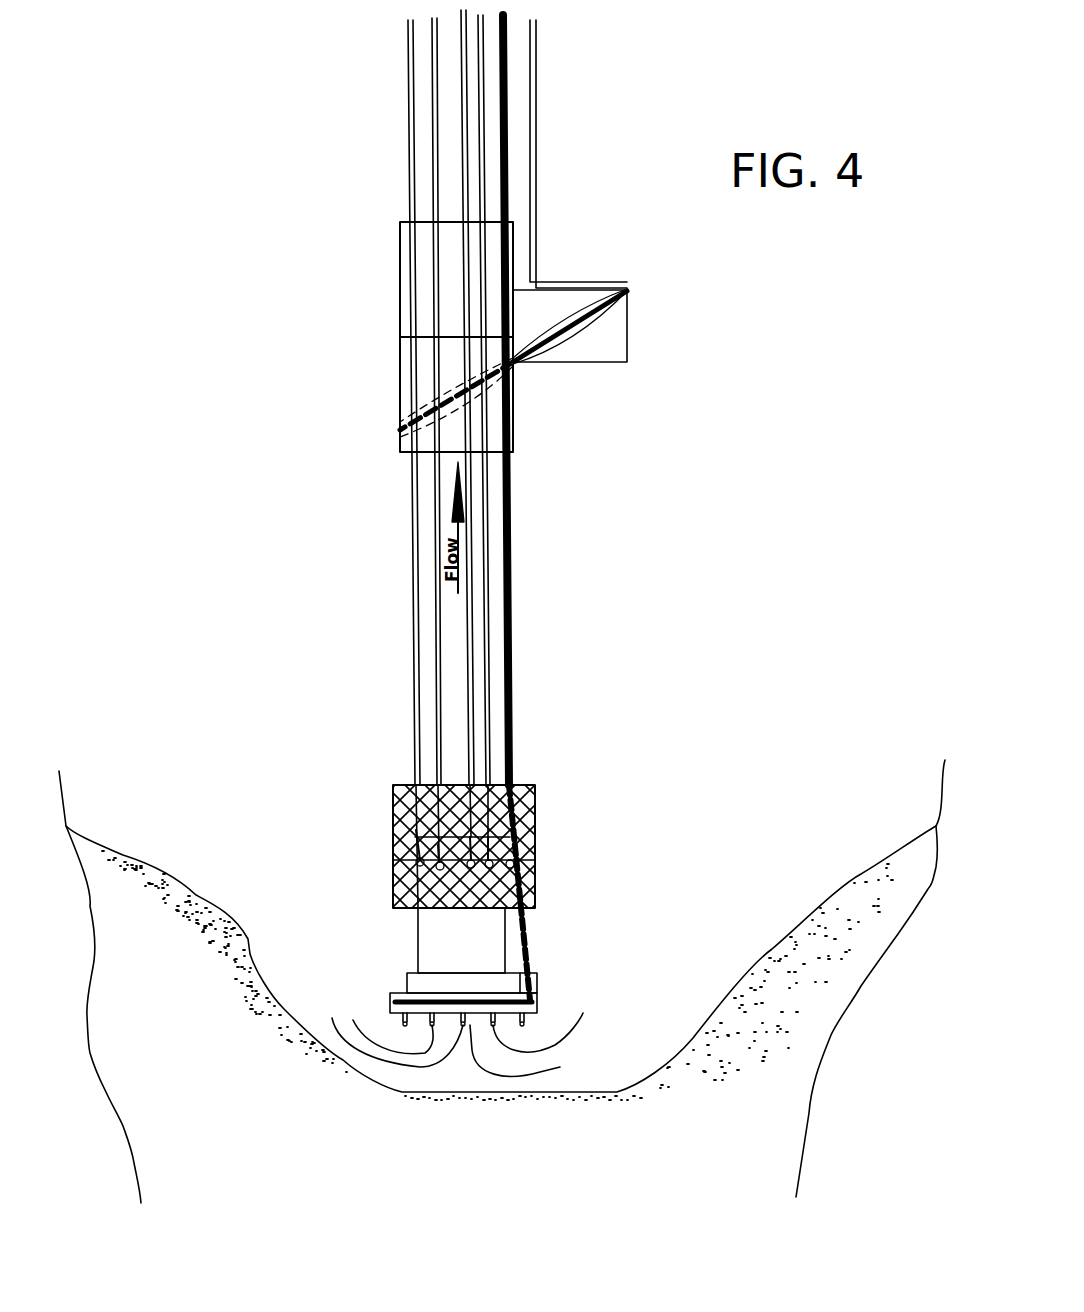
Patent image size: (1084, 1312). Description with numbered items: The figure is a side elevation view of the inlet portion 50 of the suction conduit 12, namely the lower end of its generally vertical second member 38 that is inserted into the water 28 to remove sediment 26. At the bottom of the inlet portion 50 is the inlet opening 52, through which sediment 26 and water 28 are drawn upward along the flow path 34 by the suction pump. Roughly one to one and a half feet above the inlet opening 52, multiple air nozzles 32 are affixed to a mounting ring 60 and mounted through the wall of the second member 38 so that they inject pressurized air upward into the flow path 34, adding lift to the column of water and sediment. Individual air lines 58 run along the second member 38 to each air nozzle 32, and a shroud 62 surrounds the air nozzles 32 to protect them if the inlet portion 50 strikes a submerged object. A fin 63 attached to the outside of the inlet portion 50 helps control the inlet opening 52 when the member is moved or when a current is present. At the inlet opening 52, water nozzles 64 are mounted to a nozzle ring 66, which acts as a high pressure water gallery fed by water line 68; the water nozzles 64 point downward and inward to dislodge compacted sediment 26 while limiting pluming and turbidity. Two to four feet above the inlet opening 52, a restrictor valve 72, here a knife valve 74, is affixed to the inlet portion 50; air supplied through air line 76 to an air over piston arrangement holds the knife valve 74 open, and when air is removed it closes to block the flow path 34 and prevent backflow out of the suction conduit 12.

The suction conduit 12 is at (340, 157).
The sediment 26 is at (785, 960).
The water 28 is at (812, 785).
The air nozzles 32 is at (410, 863).
The flow path 34 is at (463, 550).
The second member 38 is at (407, 86).
The inlet portion 50 is at (427, 622).
The inlet opening 52 is at (503, 1073).
The air lines 58 is at (437, 745).
The mounting ring 60 is at (395, 830).
The shroud 62 is at (537, 797).
The fin 63 is at (407, 945).
The water nozzles 64 is at (407, 1025).
The nozzle ring 66 is at (398, 997).
The water line 68 is at (530, 943).
The restrictor valve 72 is at (640, 318).
The knife valve 74 is at (578, 364).
The air line 76 is at (535, 197).